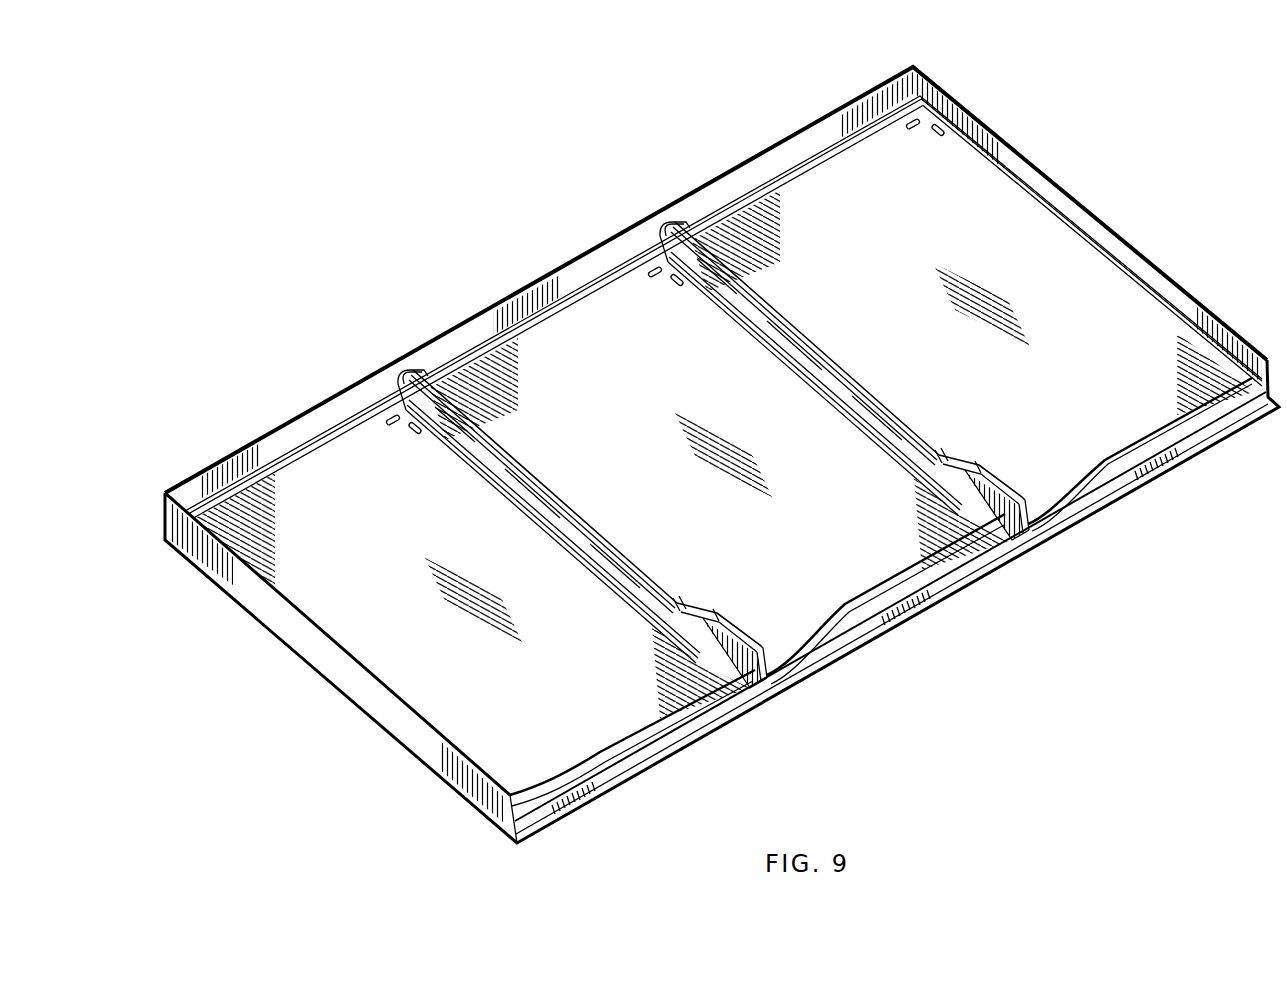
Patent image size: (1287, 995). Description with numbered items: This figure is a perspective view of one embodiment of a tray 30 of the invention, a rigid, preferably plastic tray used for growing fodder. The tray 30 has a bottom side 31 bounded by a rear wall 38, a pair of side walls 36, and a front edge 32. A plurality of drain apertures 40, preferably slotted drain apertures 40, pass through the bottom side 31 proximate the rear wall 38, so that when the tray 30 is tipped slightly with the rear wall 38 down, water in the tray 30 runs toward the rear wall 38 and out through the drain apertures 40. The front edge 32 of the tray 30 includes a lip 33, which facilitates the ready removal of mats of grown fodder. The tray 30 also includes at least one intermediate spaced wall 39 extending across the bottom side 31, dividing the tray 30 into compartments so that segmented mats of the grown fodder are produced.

The tray 30 is at (528, 138).
The bottom side 31 is at (703, 437).
The front edge 32 is at (940, 602).
The lip 33 is at (871, 607).
The side walls 36 is at (1095, 232).
The rear wall 38 is at (440, 345).
The intermediate spaced wall 39 is at (820, 357).
The drain apertures 40 is at (650, 245).